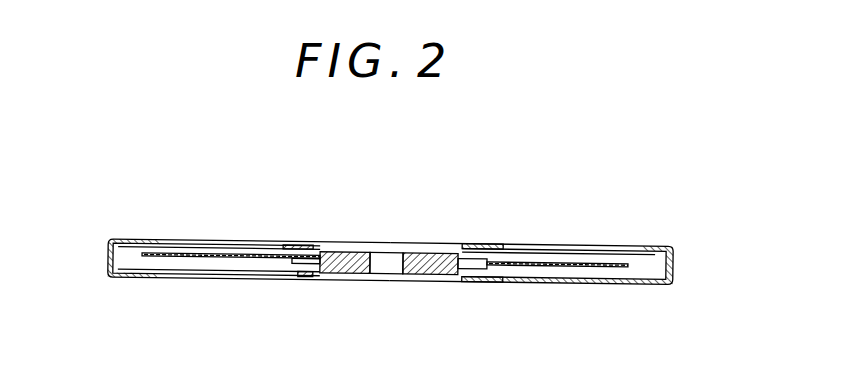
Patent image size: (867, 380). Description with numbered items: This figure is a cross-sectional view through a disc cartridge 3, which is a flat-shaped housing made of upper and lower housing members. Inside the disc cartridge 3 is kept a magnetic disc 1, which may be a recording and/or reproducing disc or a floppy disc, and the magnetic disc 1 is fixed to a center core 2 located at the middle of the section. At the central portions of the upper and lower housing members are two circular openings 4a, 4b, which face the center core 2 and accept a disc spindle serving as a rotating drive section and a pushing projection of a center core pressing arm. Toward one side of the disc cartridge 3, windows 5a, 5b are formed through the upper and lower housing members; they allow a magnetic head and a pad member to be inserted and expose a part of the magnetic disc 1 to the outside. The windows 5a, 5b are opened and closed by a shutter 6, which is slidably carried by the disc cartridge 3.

The magnetic disc 1 is at (613, 262).
The center core 2 is at (408, 250).
The disc cartridge 3 is at (500, 244).
The circular opening 4a is at (457, 248).
The circular opening 4b is at (461, 280).
The window 5a is at (285, 245).
The window 5b is at (285, 276).
The shutter 6 is at (117, 238).